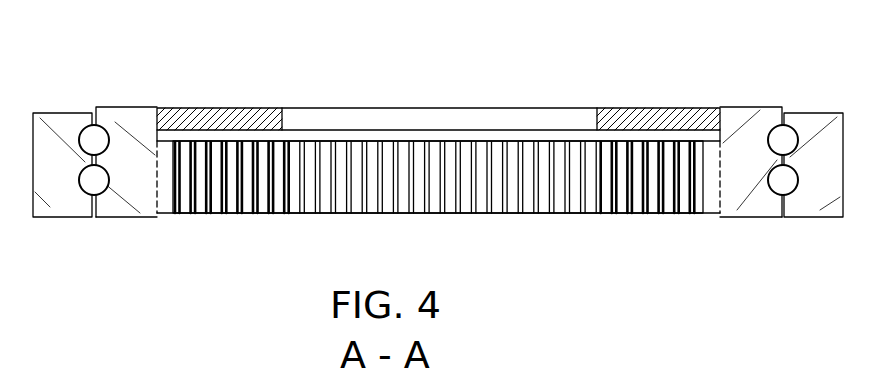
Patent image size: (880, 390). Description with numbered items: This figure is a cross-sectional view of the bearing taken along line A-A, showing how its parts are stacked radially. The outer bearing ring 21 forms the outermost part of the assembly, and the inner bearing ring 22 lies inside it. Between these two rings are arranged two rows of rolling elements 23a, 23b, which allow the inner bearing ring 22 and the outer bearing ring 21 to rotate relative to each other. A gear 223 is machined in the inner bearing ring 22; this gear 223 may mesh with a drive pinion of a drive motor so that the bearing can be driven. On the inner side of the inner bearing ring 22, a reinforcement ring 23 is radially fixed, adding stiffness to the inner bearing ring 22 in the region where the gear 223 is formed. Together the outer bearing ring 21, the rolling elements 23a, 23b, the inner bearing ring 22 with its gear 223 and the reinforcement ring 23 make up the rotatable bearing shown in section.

The outer bearing ring 21 is at (55, 205).
The inner bearing ring 22 is at (130, 127).
The reinforcement ring 23 is at (668, 130).
The row of rolling elements 23a is at (92, 135).
The row of rolling elements 23b is at (99, 182).
The gear 223 is at (713, 195).